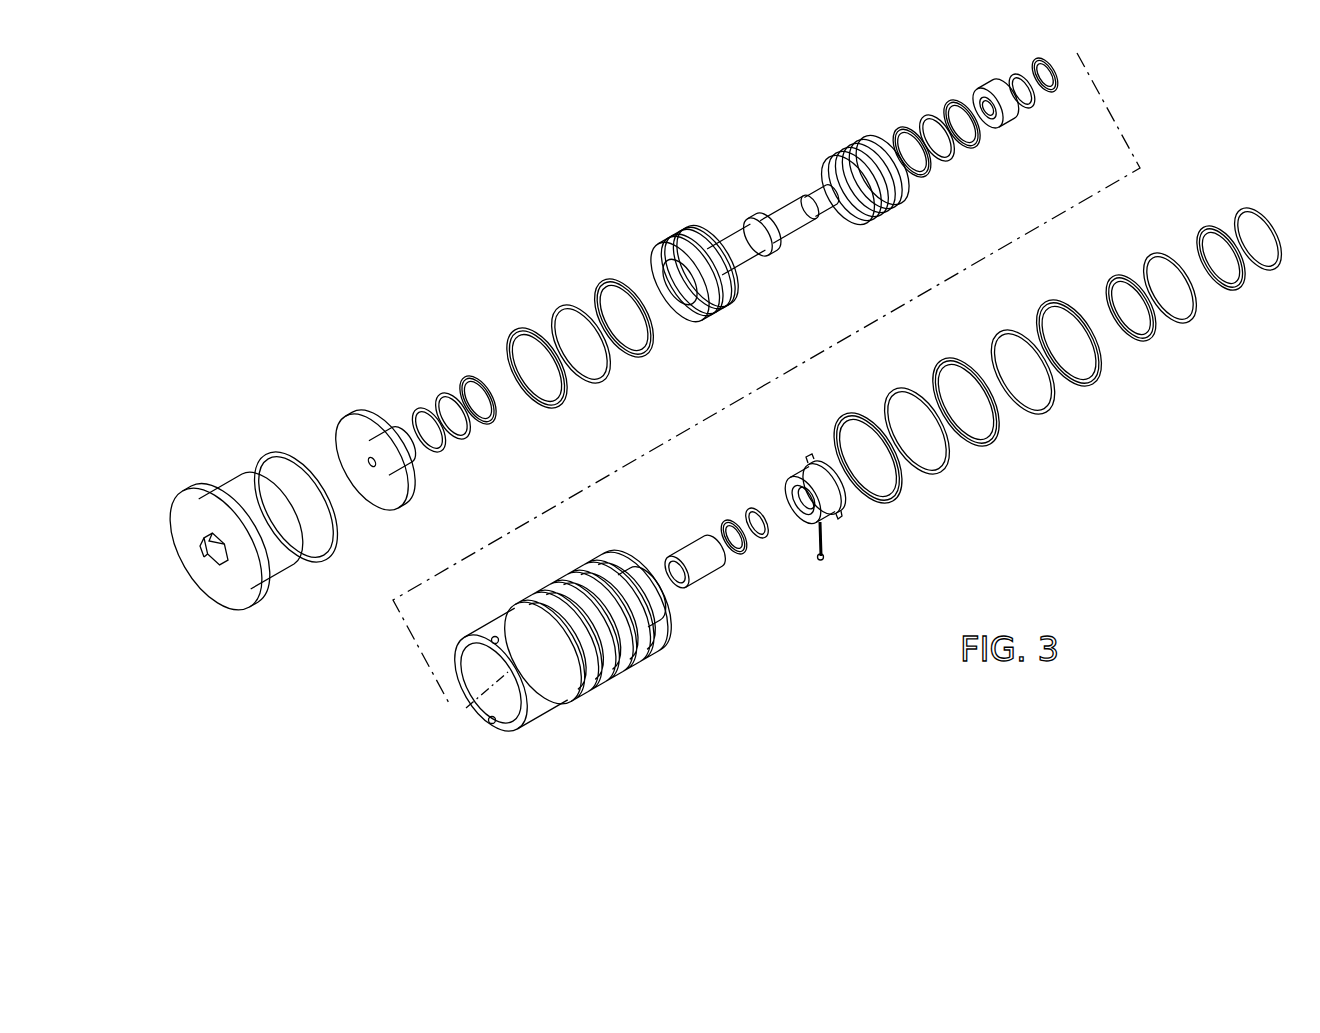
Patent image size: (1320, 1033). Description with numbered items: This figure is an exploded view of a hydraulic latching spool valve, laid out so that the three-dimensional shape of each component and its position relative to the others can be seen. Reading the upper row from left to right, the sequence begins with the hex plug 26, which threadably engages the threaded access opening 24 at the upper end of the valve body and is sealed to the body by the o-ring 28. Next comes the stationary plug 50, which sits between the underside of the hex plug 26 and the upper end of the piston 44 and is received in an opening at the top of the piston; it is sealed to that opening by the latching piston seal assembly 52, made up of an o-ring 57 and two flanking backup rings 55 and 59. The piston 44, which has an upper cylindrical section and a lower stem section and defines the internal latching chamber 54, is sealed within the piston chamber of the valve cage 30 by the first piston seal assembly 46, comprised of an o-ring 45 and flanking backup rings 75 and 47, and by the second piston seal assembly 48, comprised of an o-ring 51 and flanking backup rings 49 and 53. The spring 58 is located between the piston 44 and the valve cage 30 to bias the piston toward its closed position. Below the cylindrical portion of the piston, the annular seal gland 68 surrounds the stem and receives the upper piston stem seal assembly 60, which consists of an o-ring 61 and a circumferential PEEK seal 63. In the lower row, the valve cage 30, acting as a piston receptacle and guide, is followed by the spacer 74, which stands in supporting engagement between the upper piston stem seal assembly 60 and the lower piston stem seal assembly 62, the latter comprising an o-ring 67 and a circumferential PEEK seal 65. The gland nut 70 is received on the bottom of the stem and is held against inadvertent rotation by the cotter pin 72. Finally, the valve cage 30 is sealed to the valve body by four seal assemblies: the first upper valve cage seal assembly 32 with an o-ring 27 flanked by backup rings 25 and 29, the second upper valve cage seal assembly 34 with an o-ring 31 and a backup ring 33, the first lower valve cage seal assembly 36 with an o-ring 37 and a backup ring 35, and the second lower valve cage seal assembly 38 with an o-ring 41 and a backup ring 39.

The threaded access opening 24 is at (556, 649).
The backup ring 25 is at (893, 500).
The hex plug 26 is at (232, 600).
The o-ring 27 is at (943, 472).
The o-ring 28 is at (267, 452).
The backup ring 29 is at (993, 443).
The valve cage 30 is at (542, 705).
The o-ring 31 is at (1047, 410).
The first upper valve cage seal assembly 32 is at (924, 440).
The backup ring 33 is at (1097, 380).
The second upper valve cage seal assembly 34 is at (1057, 356).
The backup ring 35 is at (1152, 340).
The first lower valve cage seal assembly 36 is at (1158, 299).
The o-ring 37 is at (1193, 322).
The second lower valve cage seal assembly 38 is at (1249, 245).
The backup ring 39 is at (1243, 288).
The o-ring 41 is at (1280, 268).
The piston 44 is at (737, 232).
The o-ring 45 is at (608, 383).
The first piston seal assembly 46 is at (588, 349).
The backup ring 47 is at (650, 357).
The second piston seal assembly 48 is at (948, 140).
The backup ring 49 is at (923, 177).
The stationary plug 50 is at (345, 418).
The o-ring 51 is at (953, 158).
The latching piston seal assembly 52 is at (469, 416).
The backup ring 53 is at (980, 145).
The latching chamber 54 is at (663, 272).
The backup ring 55 is at (440, 453).
The o-ring 57 is at (468, 442).
The spring 58 is at (855, 153).
The backup ring 59 is at (497, 423).
The upper piston stem seal assembly 60 is at (1039, 79).
The o-ring 61 is at (1032, 105).
The lower piston stem seal assembly 62 is at (752, 532).
The circumferential PEEK seal 63 is at (1058, 92).
The circumferential PEEK seal 65 is at (743, 553).
The o-ring 67 is at (768, 535).
The annular seal gland 68 is at (1007, 120).
The gland nut 70 is at (803, 470).
The cotter pin 72 is at (827, 538).
The spacer 74 is at (700, 572).
The backup ring 75 is at (562, 403).